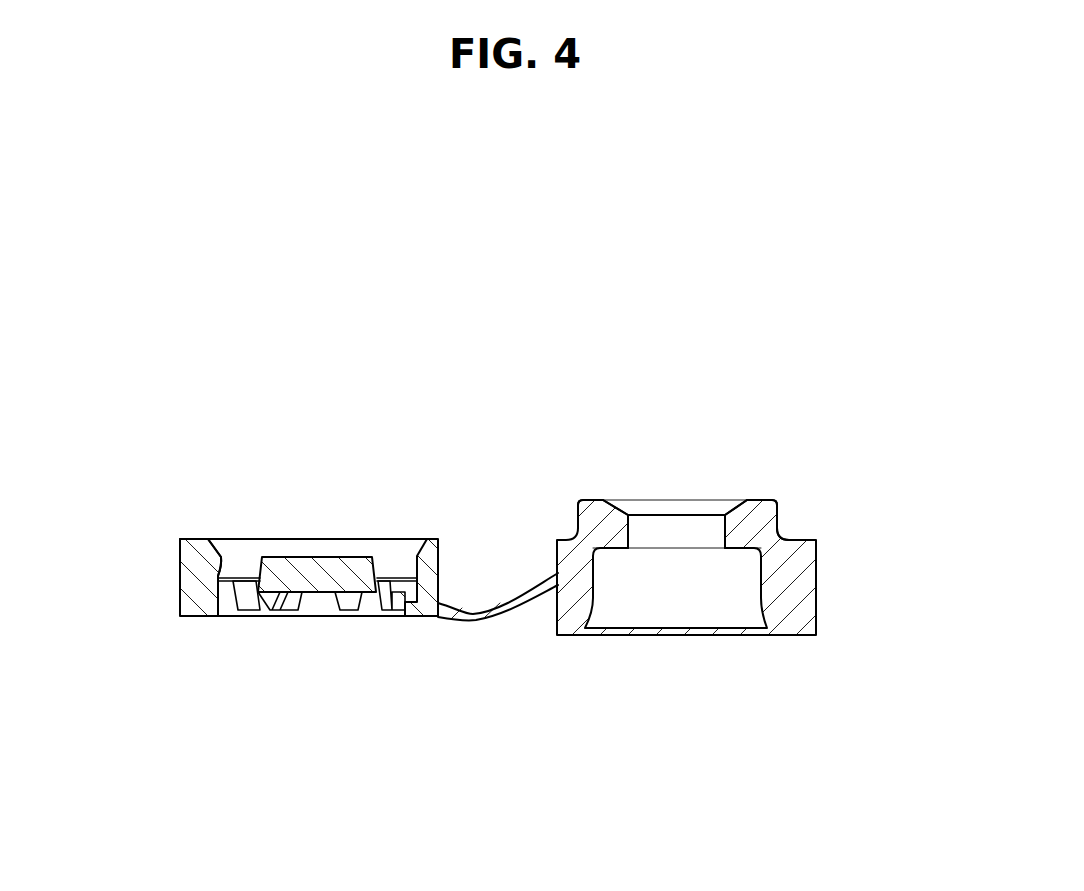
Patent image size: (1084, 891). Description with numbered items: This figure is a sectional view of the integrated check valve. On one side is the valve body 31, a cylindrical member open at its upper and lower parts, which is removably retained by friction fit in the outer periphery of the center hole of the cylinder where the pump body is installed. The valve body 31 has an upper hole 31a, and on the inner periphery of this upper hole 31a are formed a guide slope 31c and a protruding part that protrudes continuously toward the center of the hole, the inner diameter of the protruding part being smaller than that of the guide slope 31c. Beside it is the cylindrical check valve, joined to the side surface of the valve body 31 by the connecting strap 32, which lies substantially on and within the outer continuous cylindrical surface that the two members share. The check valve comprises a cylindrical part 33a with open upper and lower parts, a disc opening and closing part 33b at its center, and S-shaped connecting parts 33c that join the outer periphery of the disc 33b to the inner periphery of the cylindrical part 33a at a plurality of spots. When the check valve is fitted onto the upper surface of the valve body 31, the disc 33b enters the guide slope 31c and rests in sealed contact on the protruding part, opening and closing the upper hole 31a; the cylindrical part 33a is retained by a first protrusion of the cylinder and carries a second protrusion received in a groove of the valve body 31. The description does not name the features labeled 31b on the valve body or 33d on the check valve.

The valve body 31 is at (808, 592).
The upper hole 31a is at (733, 533).
The right flange of base 31b is at (780, 532).
The guide slope 31c is at (608, 508).
The connecting strap 32 is at (490, 610).
The cylindrical part 33a is at (450, 560).
The disc opening and closing part 33b is at (310, 550).
The S-shaped connecting parts 33c is at (292, 600).
The inclined inner wall of housing 33d is at (237, 548).